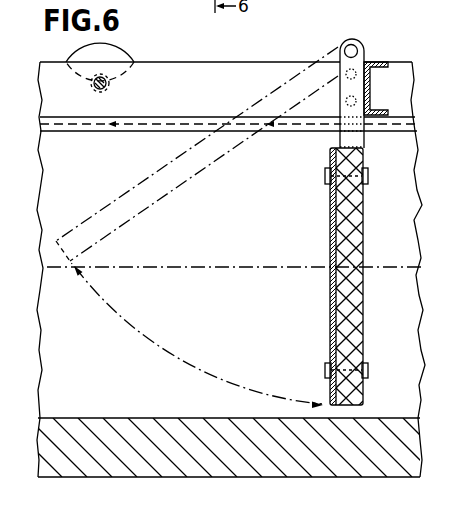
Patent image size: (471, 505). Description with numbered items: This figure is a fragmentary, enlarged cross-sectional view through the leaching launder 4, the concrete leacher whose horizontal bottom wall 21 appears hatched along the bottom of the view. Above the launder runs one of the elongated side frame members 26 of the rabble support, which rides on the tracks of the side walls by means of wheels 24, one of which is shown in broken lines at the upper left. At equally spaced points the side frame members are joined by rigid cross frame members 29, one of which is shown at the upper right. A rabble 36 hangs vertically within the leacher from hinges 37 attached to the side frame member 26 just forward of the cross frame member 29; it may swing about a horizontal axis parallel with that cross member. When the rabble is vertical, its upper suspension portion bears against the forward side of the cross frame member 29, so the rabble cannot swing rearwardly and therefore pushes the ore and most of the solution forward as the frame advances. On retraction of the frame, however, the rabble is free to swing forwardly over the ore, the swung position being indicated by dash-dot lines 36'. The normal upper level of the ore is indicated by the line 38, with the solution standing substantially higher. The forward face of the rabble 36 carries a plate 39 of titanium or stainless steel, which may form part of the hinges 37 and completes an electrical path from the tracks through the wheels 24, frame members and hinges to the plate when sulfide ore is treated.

The leaching launder 4 is at (414, 207).
The bottom wall 21 is at (112, 422).
The wheels 24 is at (122, 58).
The side frame members 26 is at (270, 63).
The cross frame members 29 is at (372, 88).
The rabble 36 is at (318, 278).
The rabble in forwardly swung position 36' is at (197, 155).
The hinges 37 is at (368, 51).
The upper level of ore line 38 is at (193, 267).
The plate 39 is at (332, 310).